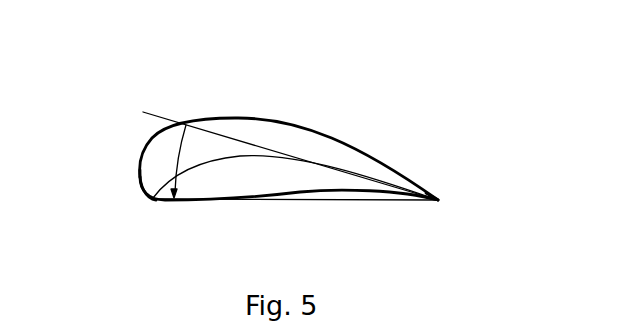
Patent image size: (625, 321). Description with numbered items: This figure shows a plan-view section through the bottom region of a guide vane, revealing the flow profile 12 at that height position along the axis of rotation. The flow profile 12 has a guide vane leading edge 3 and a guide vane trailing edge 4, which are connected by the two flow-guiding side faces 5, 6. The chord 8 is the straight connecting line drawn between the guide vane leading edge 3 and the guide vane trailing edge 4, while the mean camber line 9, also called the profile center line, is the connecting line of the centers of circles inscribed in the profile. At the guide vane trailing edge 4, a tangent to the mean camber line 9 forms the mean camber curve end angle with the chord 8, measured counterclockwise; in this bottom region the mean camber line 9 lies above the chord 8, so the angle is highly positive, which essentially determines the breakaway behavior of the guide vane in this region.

The flow profile 12 is at (145, 87).
The guide vane leading edge 3 is at (153, 199).
The guide vane trailing edge 4 is at (438, 200).
The flow-guiding side face 5 is at (336, 141).
The flow-guiding side face 6 is at (347, 193).
The chord 8 is at (318, 199).
The mean camber line 9 is at (220, 155).